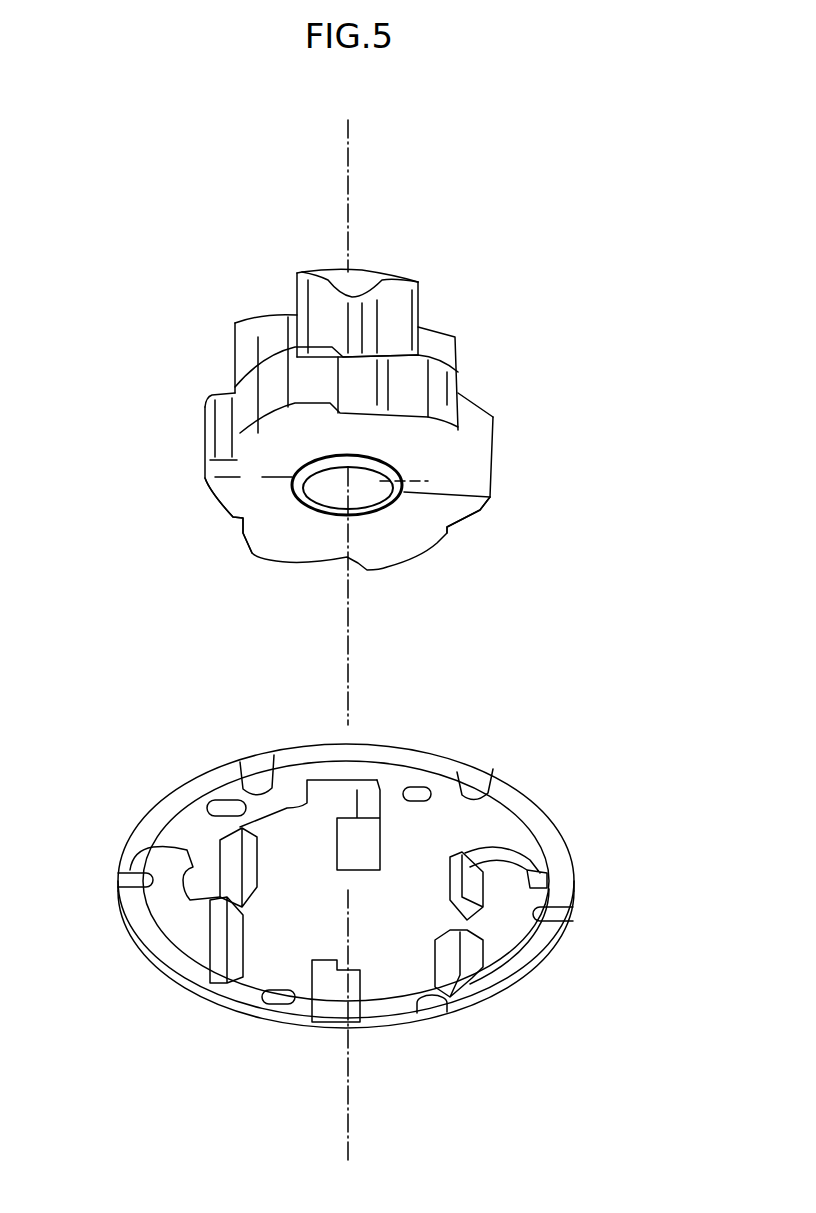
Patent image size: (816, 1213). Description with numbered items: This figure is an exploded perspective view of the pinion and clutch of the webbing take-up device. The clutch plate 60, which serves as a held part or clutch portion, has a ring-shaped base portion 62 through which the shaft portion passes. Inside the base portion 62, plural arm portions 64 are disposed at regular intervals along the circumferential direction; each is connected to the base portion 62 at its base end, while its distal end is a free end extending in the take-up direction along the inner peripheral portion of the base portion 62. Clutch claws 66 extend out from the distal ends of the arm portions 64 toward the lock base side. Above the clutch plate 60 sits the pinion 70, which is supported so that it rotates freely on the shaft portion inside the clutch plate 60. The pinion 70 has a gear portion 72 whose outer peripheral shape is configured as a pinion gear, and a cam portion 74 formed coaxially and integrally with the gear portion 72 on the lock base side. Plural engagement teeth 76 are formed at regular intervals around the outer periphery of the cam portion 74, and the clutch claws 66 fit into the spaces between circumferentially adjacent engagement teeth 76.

The clutch plate 60 is at (369, 891).
The base portion 62 is at (172, 820).
The arm portions 64 is at (208, 843).
The clutch claws 66 is at (373, 842).
The pinion 70 is at (373, 414).
The gear portion 72 is at (400, 303).
The cam portion 74 is at (397, 527).
The engagement teeth 76 is at (270, 377).